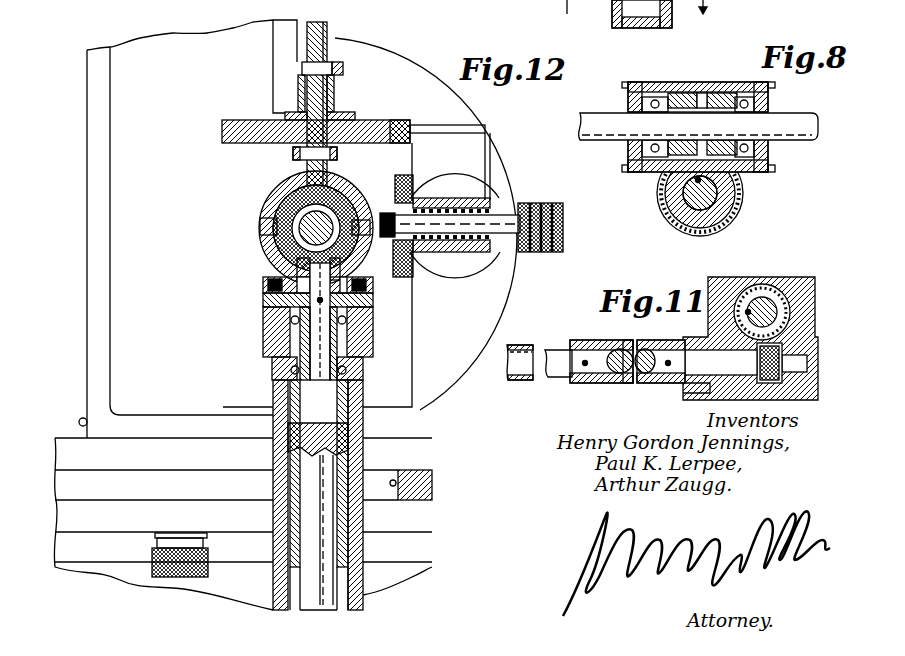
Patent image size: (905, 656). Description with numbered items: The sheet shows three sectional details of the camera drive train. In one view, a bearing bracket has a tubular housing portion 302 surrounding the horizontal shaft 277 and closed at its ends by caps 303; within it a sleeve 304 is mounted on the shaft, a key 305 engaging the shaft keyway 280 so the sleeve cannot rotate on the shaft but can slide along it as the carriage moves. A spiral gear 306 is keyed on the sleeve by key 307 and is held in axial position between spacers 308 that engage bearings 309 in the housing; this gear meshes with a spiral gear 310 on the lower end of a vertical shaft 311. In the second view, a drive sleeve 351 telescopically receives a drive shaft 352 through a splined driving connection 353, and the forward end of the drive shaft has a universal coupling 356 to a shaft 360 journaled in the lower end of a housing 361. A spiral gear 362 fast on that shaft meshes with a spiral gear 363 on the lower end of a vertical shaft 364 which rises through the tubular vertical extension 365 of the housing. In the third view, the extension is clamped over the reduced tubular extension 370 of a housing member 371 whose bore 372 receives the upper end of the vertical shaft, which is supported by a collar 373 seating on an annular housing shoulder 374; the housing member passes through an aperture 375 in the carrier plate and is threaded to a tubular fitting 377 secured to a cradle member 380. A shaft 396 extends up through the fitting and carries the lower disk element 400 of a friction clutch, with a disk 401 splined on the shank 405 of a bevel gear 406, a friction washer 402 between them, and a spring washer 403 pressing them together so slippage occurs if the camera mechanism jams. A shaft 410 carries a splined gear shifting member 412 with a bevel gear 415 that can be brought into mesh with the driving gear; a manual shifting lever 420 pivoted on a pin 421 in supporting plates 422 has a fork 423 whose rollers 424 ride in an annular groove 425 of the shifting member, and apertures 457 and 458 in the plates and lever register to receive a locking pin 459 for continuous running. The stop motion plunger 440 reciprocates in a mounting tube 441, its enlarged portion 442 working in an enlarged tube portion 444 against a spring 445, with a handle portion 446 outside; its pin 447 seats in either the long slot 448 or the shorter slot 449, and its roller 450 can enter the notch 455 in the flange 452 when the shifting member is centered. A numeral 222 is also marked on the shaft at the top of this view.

In FIG. 12, the shaft 222 is at (319, 129).
In FIG. 12, the manual shifting lever 420 is at (313, 24).
In FIG. 12, the pin 459 is at (327, 33).
In FIG. 12, the aperture 458 is at (327, 55).
In FIG. 12, the aperture 457 is at (303, 82).
In FIG. 12, the supporting plates 422 is at (300, 93).
In FIG. 12, the pin 421 is at (297, 157).
In FIG. 12, the annular groove 425 is at (337, 158).
In FIG. 12, the bevel gear 415 is at (302, 180).
In FIG. 12, the fork 423 is at (267, 185).
In FIG. 12, the flange 452 is at (257, 200).
In FIG. 12, the rollers 424 is at (263, 213).
In FIG. 12, the gear shifting member 412 is at (267, 247).
In FIG. 12, the shaft 410 is at (267, 257).
In FIG. 12, the bevel gear 406 is at (267, 267).
In FIG. 12, the shank 405 is at (265, 273).
In FIG. 12, the spring washer 403 is at (263, 285).
In FIG. 12, the disk 401 is at (263, 298).
In FIG. 12, the cradle member 380 is at (263, 327).
In FIG. 12, the shaft 396 is at (317, 352).
In FIG. 12, the friction washer 402 is at (357, 315).
In FIG. 12, the lower disk element 400 is at (350, 302).
In FIG. 12, the tubular fitting 377 is at (363, 367).
In FIG. 12, the bore 372 is at (305, 515).
In FIG. 12, the reduced tubular extension 370 is at (345, 515).
In FIG. 12, the housing member 371 is at (362, 450).
In FIG. 12, the collar 373 is at (293, 430).
In FIG. 12, the annular housing shoulder 374 is at (297, 453).
In FIG. 12, the vertical shaft 364 is at (322, 593).
In FIG. 11, the vertical shaft 364 is at (723, 277).
In FIG. 12, the tubular vertical extension 365 is at (363, 553).
In FIG. 12, the aperture 375 is at (413, 470).
In FIG. 12, the pin 447 is at (413, 175).
In FIG. 12, the slot 448 is at (413, 152).
In FIG. 12, the slot 449 is at (398, 280).
In FIG. 12, the mounting tube 441 is at (413, 285).
In FIG. 12, the spring 445 is at (460, 200).
In FIG. 12, the enlarged tube portion 444 is at (480, 200).
In FIG. 12, the plunger 440 is at (477, 220).
In FIG. 12, the handle portion 446 is at (563, 233).
In FIG. 12, the enlarged portion 442 is at (508, 237).
In FIG. 12, the roller 450 is at (400, 187).
In FIG. 12, the notch 455 is at (393, 187).
In FIG. 8, the spiral gear 363 is at (618, 12).
In FIG. 11, the spiral gear 363 is at (780, 252).
In FIG. 8, the spiral gear 310 is at (690, 220).
In FIG. 8, the vertical shaft 311 is at (673, 217).
In FIG. 8, the caps 303 is at (628, 95).
In FIG. 8, the bearings 309 is at (648, 97).
In FIG. 8, the key 307 is at (687, 97).
In FIG. 8, the spiral gear 306 is at (687, 100).
In FIG. 8, the tubular housing portion 302 is at (703, 85).
In FIG. 8, the key 305 is at (703, 137).
In FIG. 8, the horizontal shaft 277 is at (598, 123).
In FIG. 8, the sleeve 304 is at (730, 113).
In FIG. 8, the keyway 280 is at (647, 127).
In FIG. 8, the spacers 308 is at (665, 167).
In FIG. 11, the housing 361 is at (830, 252).
In FIG. 11, the spiral gear 362 is at (710, 318).
In FIG. 11, the shaft 360 is at (675, 377).
In FIG. 11, the universal coupling 356 is at (627, 383).
In FIG. 11, the drive shaft 352 is at (558, 368).
In FIG. 11, the drive sleeve 351 is at (515, 378).
In FIG. 11, the splined driving connection 353 is at (518, 342).